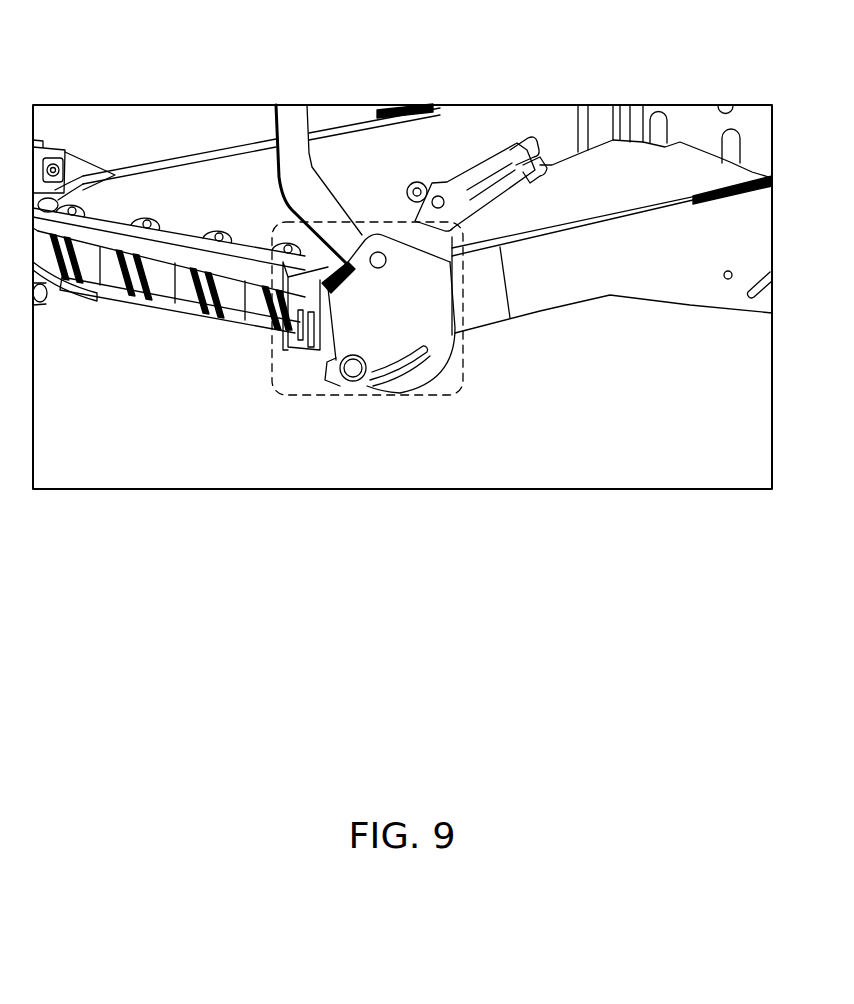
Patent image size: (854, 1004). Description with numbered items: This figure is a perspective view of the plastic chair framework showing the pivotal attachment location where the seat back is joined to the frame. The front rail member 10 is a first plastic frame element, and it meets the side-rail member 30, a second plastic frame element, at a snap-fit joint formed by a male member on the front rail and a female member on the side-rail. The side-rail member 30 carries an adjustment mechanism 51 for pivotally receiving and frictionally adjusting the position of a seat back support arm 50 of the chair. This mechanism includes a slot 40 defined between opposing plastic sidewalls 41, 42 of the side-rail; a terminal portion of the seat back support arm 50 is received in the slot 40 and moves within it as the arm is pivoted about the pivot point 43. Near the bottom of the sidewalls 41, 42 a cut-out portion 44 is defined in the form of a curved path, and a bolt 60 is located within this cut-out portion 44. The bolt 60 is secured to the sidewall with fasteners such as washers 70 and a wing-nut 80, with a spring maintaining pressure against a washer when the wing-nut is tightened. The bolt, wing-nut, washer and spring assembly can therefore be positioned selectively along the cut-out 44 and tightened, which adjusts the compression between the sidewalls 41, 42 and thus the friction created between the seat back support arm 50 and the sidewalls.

The front rail member 10 is at (175, 293).
The side-rail member 30 is at (582, 272).
The slot 40 is at (378, 251).
The sidewall 41 is at (390, 305).
The sidewall 42 is at (330, 272).
The pivot point 43 is at (392, 170).
The cut-out portion 44 is at (412, 358).
The seat back support arm 50 is at (293, 172).
The adjustment mechanism 51 is at (463, 372).
The bolt 60 is at (360, 372).
The washers 70 is at (353, 382).
The wing-nut 80 is at (325, 380).